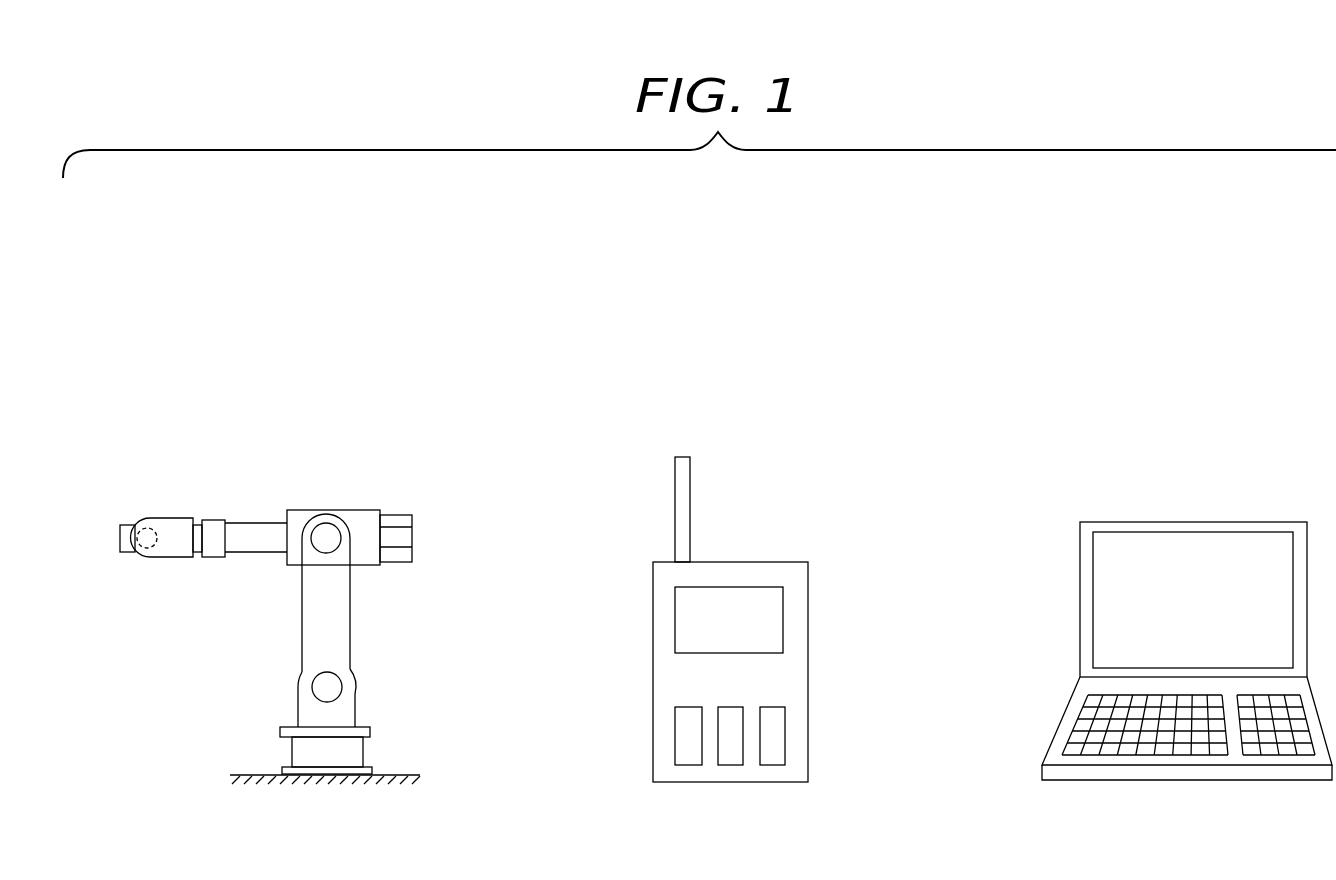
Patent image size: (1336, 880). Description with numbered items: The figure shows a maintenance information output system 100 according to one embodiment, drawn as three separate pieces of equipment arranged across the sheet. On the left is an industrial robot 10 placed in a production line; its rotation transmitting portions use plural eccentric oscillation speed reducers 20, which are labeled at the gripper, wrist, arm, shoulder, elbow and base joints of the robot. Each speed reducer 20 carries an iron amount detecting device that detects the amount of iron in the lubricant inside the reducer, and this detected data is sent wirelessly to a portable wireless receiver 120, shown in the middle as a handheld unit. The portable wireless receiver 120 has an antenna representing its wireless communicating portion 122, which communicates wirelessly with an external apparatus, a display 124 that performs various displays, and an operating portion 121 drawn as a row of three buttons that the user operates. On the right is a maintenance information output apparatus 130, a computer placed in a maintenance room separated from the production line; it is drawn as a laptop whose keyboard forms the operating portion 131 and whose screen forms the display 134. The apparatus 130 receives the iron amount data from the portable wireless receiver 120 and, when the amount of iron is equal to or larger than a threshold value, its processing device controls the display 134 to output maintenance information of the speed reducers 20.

The maintenance information output system 100 is at (690, 348).
The industrial robot 10 is at (266, 588).
The eccentric oscillation speed reducer 20 is at (130, 522).
The portable wireless receiver 120 is at (701, 626).
The operating portion 121 is at (697, 765).
The wireless communicating portion 122 is at (675, 498).
The display 124 is at (686, 620).
The maintenance information output apparatus 130 is at (1153, 587).
The operating portion 131 is at (1088, 712).
The display 134 is at (1105, 580).